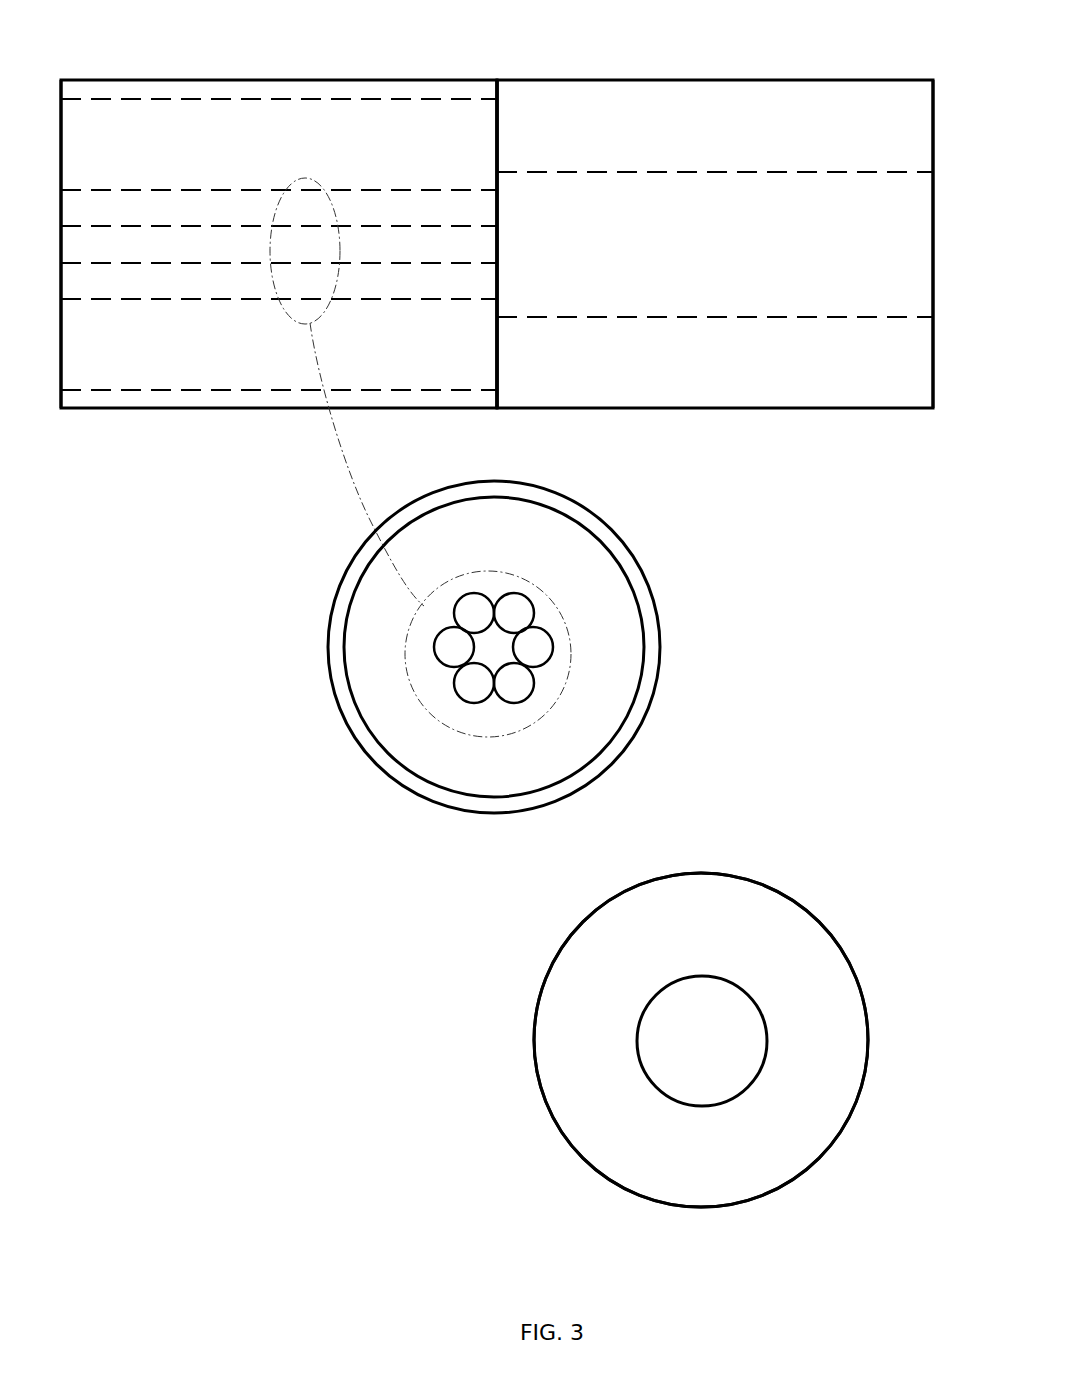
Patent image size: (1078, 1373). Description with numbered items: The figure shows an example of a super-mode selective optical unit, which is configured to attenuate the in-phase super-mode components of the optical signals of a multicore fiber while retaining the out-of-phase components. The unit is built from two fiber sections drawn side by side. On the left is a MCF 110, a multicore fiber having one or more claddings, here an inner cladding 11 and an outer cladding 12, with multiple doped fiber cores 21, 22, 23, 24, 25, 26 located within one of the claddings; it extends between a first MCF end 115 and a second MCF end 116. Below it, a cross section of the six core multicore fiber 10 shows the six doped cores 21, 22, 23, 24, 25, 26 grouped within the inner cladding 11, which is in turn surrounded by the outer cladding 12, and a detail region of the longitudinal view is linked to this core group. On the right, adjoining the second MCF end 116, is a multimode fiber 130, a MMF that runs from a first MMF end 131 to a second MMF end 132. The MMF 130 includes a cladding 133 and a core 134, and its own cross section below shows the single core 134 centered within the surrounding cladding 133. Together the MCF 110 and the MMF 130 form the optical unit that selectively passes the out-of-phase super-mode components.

The six core multicore fiber 10 is at (434, 854).
The inner cladding 11 is at (231, 155).
The outer cladding 12 is at (76, 393).
The doped fiber core 21 is at (501, 625).
The doped fiber core 22 is at (520, 659).
The doped fiber core 23 is at (501, 695).
The doped fiber core 24 is at (461, 695).
The doped fiber core 25 is at (441, 659).
The doped fiber core 26 is at (461, 625).
The MCF 110 is at (254, 63).
The first MCF end 115 is at (81, 79).
The second MCF end 116 is at (496, 88).
The multimode fiber 130 is at (607, 78).
The first MMF end 131 is at (500, 375).
The second MMF end 132 is at (930, 373).
The cladding 133 is at (778, 132).
The core 134 is at (684, 1012).